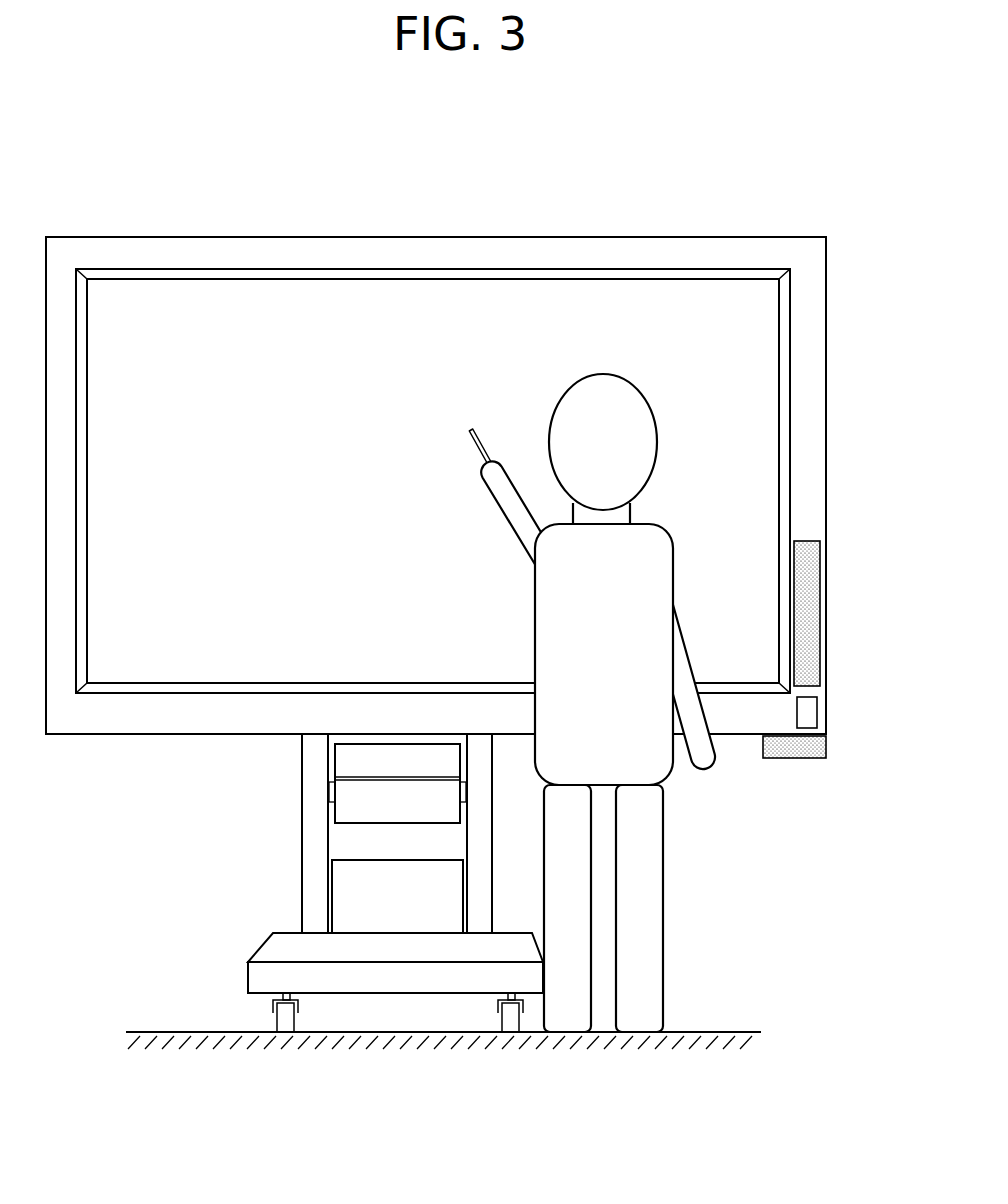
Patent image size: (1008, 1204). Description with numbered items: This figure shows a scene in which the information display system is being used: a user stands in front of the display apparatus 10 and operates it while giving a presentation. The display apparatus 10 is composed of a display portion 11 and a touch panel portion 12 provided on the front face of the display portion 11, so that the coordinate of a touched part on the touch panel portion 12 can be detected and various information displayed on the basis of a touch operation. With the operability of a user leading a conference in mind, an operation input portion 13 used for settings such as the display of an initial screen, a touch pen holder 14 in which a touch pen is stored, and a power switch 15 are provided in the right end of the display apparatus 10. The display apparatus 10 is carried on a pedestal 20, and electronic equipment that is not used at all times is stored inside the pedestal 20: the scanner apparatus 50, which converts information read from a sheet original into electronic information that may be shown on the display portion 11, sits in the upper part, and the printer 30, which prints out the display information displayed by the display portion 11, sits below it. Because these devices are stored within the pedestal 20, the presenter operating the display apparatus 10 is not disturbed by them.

The display apparatus 10 is at (607, 183).
The display portion 11 is at (433, 481).
The touch panel portion 12 is at (712, 237).
The operation input portion 13 is at (810, 596).
The touch pen holder 14 is at (793, 758).
The power switch 15 is at (810, 712).
The pedestal 20 is at (300, 862).
The printer 30 is at (340, 893).
The scanner apparatus 50 is at (340, 806).